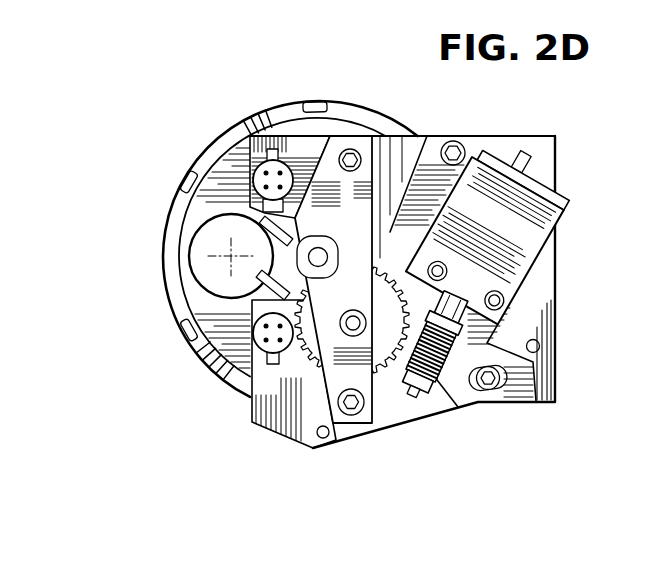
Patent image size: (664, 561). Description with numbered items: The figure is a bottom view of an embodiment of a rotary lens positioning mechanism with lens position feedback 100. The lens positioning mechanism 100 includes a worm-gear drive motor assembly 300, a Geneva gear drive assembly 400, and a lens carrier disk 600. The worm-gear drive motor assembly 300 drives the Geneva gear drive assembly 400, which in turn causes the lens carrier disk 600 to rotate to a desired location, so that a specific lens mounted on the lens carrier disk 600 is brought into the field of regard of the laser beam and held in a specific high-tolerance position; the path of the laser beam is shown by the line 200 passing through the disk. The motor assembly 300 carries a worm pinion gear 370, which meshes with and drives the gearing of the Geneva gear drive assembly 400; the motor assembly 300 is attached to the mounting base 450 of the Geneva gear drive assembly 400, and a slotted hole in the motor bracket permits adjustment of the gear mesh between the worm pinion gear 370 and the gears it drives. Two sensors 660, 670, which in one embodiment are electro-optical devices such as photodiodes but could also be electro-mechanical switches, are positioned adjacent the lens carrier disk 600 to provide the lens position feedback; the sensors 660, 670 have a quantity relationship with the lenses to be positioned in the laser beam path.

The rotary lens positioning mechanism with lens position feedback 100 is at (148, 262).
The line showing the path of the laser beam 200 is at (223, 261).
The worm-gear drive motor assembly 300 is at (537, 209).
The worm pinion gear 370 is at (481, 404).
The Geneva gear drive assembly 400 is at (330, 390).
The mounting base 450 is at (541, 294).
The lens carrier disk 600 is at (197, 162).
The sensor 660 is at (223, 377).
The sensor 670 is at (262, 176).